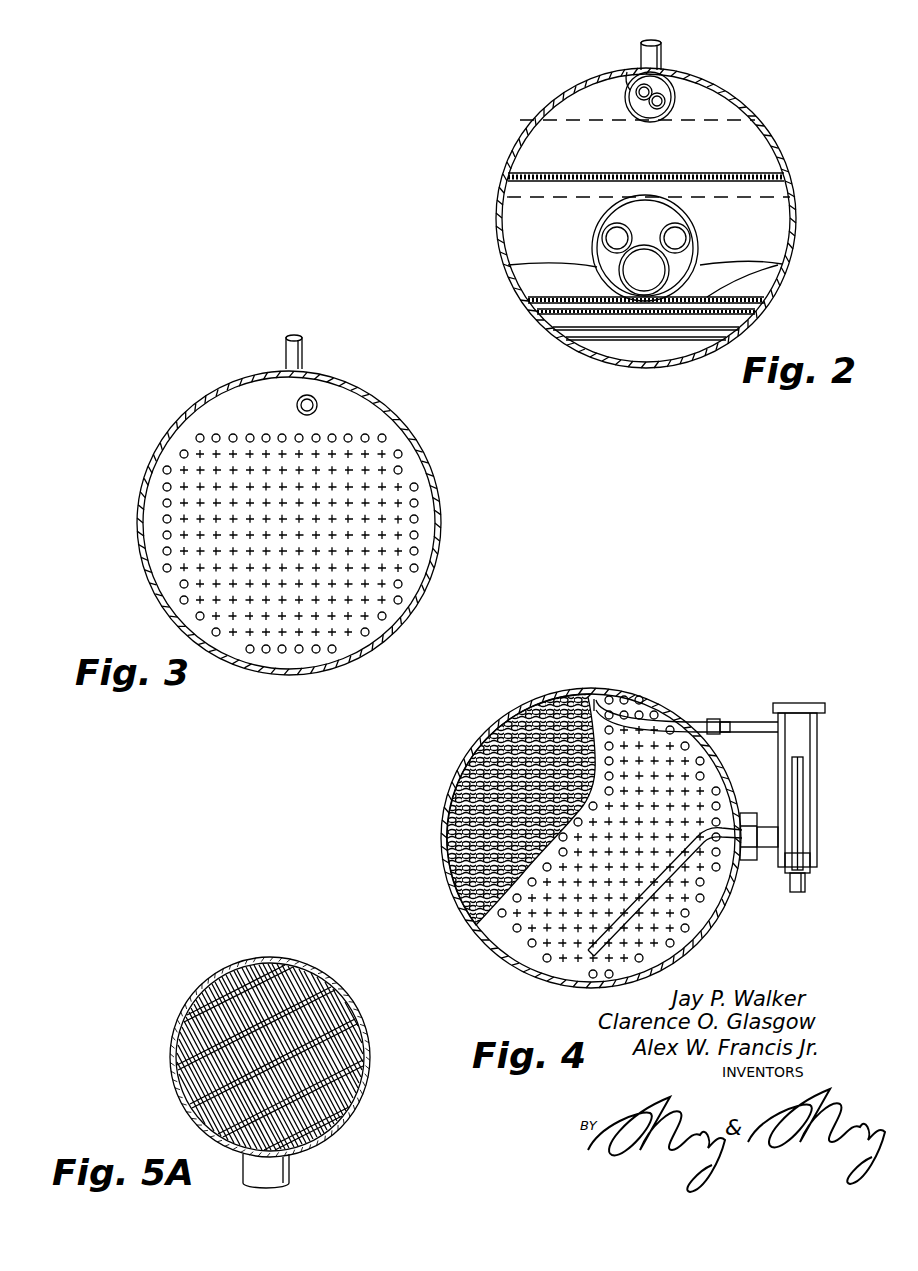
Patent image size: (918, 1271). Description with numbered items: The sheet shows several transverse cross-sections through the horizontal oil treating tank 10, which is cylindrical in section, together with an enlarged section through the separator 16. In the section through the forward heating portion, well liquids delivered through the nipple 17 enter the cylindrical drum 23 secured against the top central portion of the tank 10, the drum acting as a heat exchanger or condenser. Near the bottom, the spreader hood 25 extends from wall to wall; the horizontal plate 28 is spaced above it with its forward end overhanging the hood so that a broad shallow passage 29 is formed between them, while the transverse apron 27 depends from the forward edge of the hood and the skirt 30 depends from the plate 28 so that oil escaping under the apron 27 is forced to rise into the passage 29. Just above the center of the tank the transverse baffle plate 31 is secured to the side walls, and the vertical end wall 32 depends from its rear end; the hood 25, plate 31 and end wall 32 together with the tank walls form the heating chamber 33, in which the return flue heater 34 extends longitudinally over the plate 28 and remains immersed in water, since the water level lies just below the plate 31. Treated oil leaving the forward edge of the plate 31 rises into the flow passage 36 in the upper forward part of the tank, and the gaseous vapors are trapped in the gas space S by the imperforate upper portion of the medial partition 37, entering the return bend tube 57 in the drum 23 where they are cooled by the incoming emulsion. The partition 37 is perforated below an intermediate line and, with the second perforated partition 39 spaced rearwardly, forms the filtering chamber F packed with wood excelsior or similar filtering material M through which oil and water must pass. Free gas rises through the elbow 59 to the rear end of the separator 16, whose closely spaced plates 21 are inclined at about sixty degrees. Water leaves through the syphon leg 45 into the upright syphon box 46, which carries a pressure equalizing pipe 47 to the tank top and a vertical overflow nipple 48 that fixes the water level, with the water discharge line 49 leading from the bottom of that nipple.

In FIG. 2, the tank 10 is at (500, 200).
In FIG. 3, the tank 10 is at (424, 586).
In FIG. 4, the tank 10 is at (453, 893).
In FIG. 5A, the separator 16 is at (292, 957).
In FIG. 2, the nipple 17 is at (640, 60).
In FIG. 5A, the nipple 17 is at (290, 1158).
In FIG. 5A, the plates 21 is at (238, 961).
In FIG. 2, the drum 23 is at (688, 83).
In FIG. 2, the spreader hood 25 is at (535, 320).
In FIG. 2, the apron 27 is at (613, 332).
In FIG. 2, the plate 28 is at (778, 265).
In FIG. 2, the passage 29 is at (743, 312).
In FIG. 2, the skirt 30 is at (547, 336).
In FIG. 2, the baffle plate 31 is at (545, 172).
In FIG. 2, the end wall 32 is at (742, 223).
In FIG. 2, the heating chamber 33 is at (555, 192).
In FIG. 2, the heater 34 is at (620, 273).
In FIG. 2, the flow passage 36 is at (555, 132).
In FIG. 3, the medial partition 37 is at (423, 512).
In FIG. 4, the perforated partition 39 is at (523, 947).
In FIG. 4, the syphon leg 45 is at (590, 957).
In FIG. 4, the syphon box 46 is at (817, 790).
In FIG. 4, the pressure equalizing pipe 47 is at (785, 727).
In FIG. 4, the overflow nipple 48 is at (790, 767).
In FIG. 4, the water discharge line 49 is at (797, 892).
In FIG. 2, the return bend tube 57 is at (623, 93).
In FIG. 3, the return bend tube 57 is at (314, 397).
In FIG. 3, the elbow 59 is at (297, 362).
In FIG. 2, the gas space S is at (593, 110).
In FIG. 4, the filtering material M is at (500, 712).
In FIG. 4, the filtering chamber F is at (462, 763).